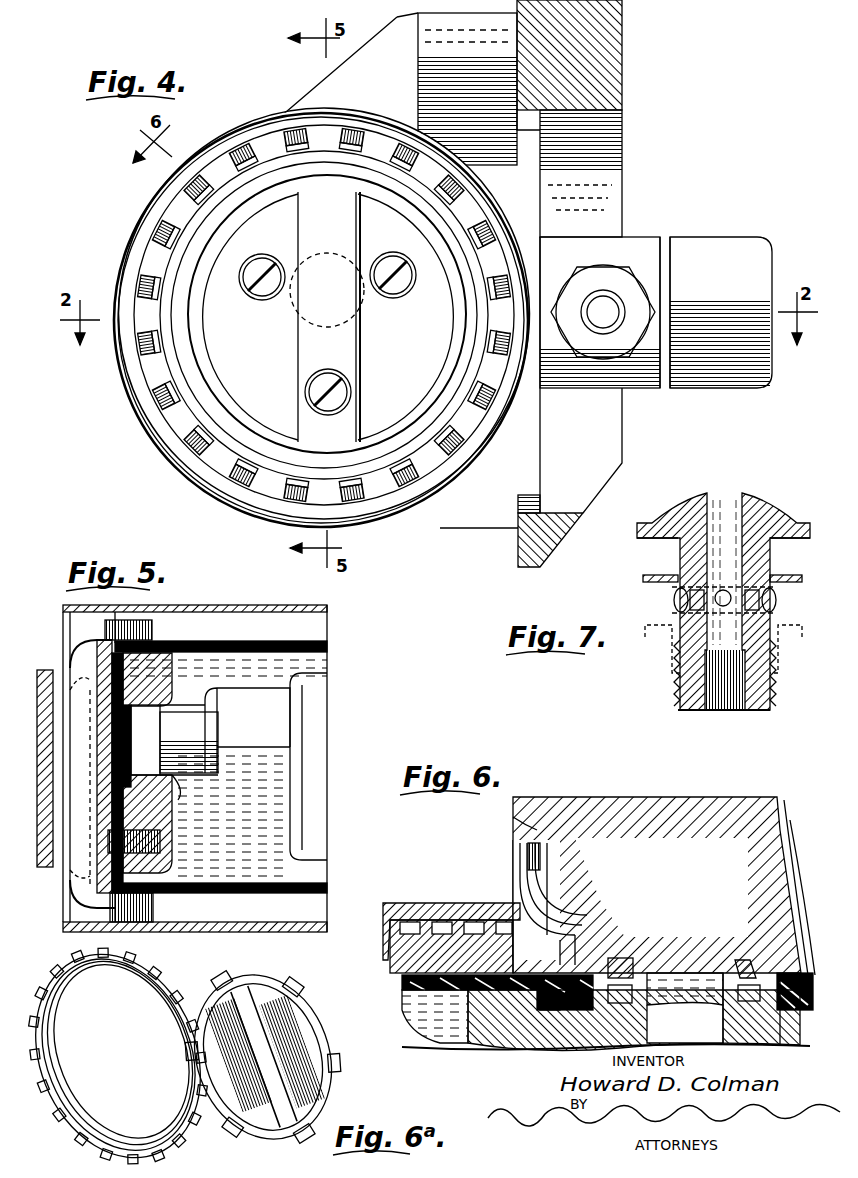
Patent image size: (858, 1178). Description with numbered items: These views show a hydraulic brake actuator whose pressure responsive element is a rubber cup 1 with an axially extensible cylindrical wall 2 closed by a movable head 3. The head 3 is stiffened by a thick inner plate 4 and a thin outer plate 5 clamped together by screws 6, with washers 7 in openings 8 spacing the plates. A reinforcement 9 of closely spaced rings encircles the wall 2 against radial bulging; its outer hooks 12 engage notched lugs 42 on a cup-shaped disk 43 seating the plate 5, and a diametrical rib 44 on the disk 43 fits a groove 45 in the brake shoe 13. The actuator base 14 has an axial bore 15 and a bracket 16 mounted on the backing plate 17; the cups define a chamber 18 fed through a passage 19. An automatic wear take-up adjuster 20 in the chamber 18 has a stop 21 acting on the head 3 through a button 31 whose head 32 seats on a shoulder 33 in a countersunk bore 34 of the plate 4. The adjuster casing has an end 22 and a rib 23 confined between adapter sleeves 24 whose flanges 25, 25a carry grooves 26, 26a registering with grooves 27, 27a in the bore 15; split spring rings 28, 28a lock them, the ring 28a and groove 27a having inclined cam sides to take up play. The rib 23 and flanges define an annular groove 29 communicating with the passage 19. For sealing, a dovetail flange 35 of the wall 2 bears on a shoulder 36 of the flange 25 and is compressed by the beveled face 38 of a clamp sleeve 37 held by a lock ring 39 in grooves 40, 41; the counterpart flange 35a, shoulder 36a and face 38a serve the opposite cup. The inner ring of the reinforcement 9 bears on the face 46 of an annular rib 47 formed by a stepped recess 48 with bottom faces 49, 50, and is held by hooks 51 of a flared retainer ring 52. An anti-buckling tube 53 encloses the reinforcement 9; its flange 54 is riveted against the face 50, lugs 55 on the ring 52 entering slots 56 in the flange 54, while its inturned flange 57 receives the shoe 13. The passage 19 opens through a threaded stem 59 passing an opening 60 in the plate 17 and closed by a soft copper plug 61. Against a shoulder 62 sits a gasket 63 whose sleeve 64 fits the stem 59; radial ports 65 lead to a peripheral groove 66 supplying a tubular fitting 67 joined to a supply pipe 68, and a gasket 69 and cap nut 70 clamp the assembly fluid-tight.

In FIG. 5, the rubber cup 1 is at (228, 641).
In FIG. 6, the rubber cup 1 is at (397, 988).
In FIG. 5, the cylindrical wall 2 is at (300, 643).
In FIG. 5, the movable wall 3 is at (107, 695).
In FIG. 5, the thick circular plate 4 is at (173, 826).
In FIG. 5, the thin circular plate 5 is at (100, 712).
In FIG. 4, the screws 6 is at (265, 294).
In FIG. 5, the screws 6 is at (98, 830).
In FIG. 5, the washers 7 is at (117, 815).
In FIG. 5, the openings 8 is at (120, 823).
In FIG. 5, the reinforcement 9 is at (158, 633).
In FIG. 6, the reinforcement 9 is at (390, 955).
In FIG. 5, the hooks 12 is at (125, 925).
In FIG. 6, the hooks 12 is at (435, 920).
In FIG. 5, the brake shoe 13 is at (43, 868).
In FIG. 4, the base 14 is at (467, 529).
In FIG. 7, the base 14 is at (762, 501).
In FIG. 6, the base 14 is at (707, 810).
In FIG. 6, the axial bore 15 is at (693, 975).
In FIG. 4, the bracket 16 is at (446, 42).
In FIG. 4, the brake backing plate 17 is at (612, 52).
In FIG. 5, the fluid chamber 18 is at (320, 660).
In FIG. 6, the fluid chamber 18 is at (435, 1025).
In FIG. 7, the inlet and discharge passage 19 is at (727, 493).
In FIG. 5, the automatic wear take-up adjuster 20 is at (314, 788).
In FIG. 5, the stop 21 is at (273, 705).
In FIG. 5, the casing end 22 is at (315, 750).
In FIG. 6, the rib 23 is at (670, 1012).
In FIG. 6, the adapter sleeve 24 is at (460, 1048).
In FIG. 6, the annular flange 25 is at (635, 1003).
In FIG. 6, the annular flange 25a is at (768, 1040).
In FIG. 6, the annular groove 26 is at (623, 1003).
In FIG. 6, the annular groove 26a is at (752, 1003).
In FIG. 6, the groove 27 is at (622, 958).
In FIG. 6, the groove 27a is at (737, 960).
In FIG. 6, the split spring ring 28 is at (625, 960).
In FIG. 6, the split spring ring 28a is at (748, 985).
In FIG. 6, the annular groove 29 is at (692, 995).
In FIG. 5, the button 31 is at (196, 729).
In FIG. 4, the enlarged head 32 is at (337, 252).
In FIG. 5, the enlarged head 32 is at (150, 722).
In FIG. 5, the shoulder 33 is at (168, 707).
In FIG. 5, the countersunk bore 34 is at (178, 789).
In FIG. 6, the dovetail flange 35 is at (590, 972).
In FIG. 6, the gasket 35a is at (790, 975).
In FIG. 6, the shoulder 36 is at (570, 1048).
In FIG. 6, the plate 36a is at (779, 830).
In FIG. 6, the clamp sleeve 37 is at (525, 1048).
In FIG. 6, the beveled face 38 is at (540, 1048).
In FIG. 6, the ring 38a is at (815, 973).
In FIG. 6, the split spring lock ring 39 is at (500, 1048).
In FIG. 6, the annular groove 40 is at (480, 1048).
In FIG. 6, the annular groove 41 is at (440, 1047).
In FIG. 4, the peripheral lugs 42 is at (416, 421).
In FIG. 5, the peripheral lugs 42 is at (104, 626).
In FIG. 6A, the peripheral lugs 42 is at (233, 988).
In FIG. 4, the cup-shaped disk 43 is at (173, 387).
In FIG. 6A, the cup-shaped disk 43 is at (302, 1012).
In FIG. 4, the diametrical rib 44 is at (345, 363).
In FIG. 5, the diametrical rib 44 is at (60, 670).
In FIG. 6A, the diametrical rib 44 is at (298, 993).
In FIG. 5, the groove 45 is at (58, 740).
In FIG. 6, the end face 46 is at (543, 945).
In FIG. 6, the annular rib 47 is at (550, 965).
In FIG. 6, the stepped annular recess 48 is at (520, 905).
In FIG. 6, the inner bottom face 49 is at (562, 870).
In FIG. 4, the outer bottom face 50 is at (204, 441).
In FIG. 6, the outer bottom face 50 is at (555, 860).
In FIG. 6, the hooks 51 is at (497, 922).
In FIG. 6A, the hooks 51 is at (105, 1100).
In FIG. 6, the retainer ring 52 is at (547, 925).
In FIG. 6A, the retainer ring 52 is at (160, 1133).
In FIG. 4, the anti-buckling tube 53 is at (227, 367).
In FIG. 5, the anti-buckling tube 53 is at (203, 928).
In FIG. 6, the anti-buckling tube 53 is at (400, 903).
In FIG. 4, the annular flange 54 is at (157, 262).
In FIG. 6, the annular flange 54 is at (527, 880).
In FIG. 4, the lugs 55 is at (162, 343).
In FIG. 6, the lugs 55 is at (530, 868).
In FIG. 6A, the lugs 55 is at (160, 1007).
In FIG. 4, the slots 56 is at (205, 452).
In FIG. 6, the slots 56 is at (532, 855).
In FIG. 4, the inturned flange 57 is at (207, 223).
In FIG. 5, the inturned flange 57 is at (66, 613).
In FIG. 7, the stem 59 is at (763, 692).
In FIG. 4, the opening 60 is at (596, 112).
In FIG. 7, the plug 61 is at (730, 712).
In FIG. 7, the shoulder 62 is at (657, 540).
In FIG. 4, the soft metal gasket 63 is at (544, 392).
In FIG. 7, the soft metal gasket 63 is at (781, 637).
In FIG. 7, the axial sleeve 64 is at (778, 608).
In FIG. 7, the radial ports 65 is at (776, 598).
In FIG. 7, the annular groove 66 is at (672, 597).
In FIG. 4, the tubular fitting 67 is at (633, 252).
In FIG. 4, the supply pipe 68 is at (606, 347).
In FIG. 4, the soft metal gasket 69 is at (662, 372).
In FIG. 4, the cap nut 70 is at (738, 244).